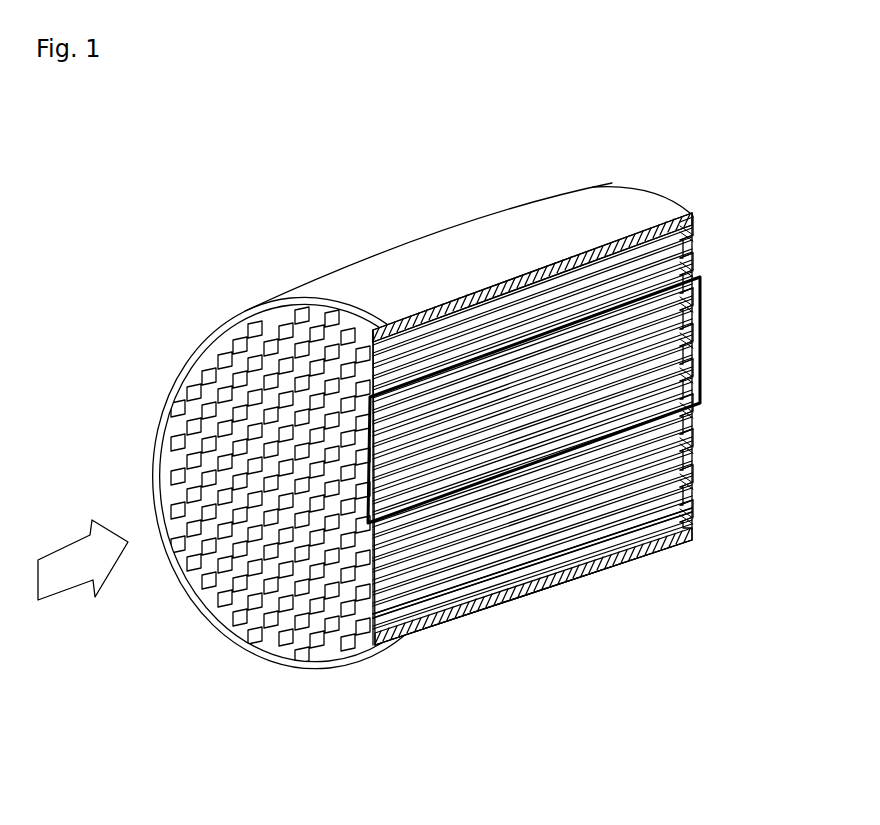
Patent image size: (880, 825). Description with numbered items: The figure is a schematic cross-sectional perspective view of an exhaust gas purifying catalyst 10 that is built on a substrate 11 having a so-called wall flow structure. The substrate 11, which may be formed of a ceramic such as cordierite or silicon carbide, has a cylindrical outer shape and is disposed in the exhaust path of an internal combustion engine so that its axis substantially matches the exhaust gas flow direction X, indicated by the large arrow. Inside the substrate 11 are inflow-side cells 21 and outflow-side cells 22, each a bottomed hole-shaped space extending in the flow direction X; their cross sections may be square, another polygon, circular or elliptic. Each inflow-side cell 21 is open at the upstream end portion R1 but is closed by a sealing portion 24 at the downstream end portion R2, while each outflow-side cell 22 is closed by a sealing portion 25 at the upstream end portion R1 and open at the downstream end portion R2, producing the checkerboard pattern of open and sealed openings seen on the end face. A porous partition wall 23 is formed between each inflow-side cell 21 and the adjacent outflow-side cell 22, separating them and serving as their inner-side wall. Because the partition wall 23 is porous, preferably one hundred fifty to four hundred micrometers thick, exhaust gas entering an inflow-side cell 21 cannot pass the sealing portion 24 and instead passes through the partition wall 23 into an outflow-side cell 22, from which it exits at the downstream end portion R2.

The exhaust gas purifying catalyst 10 is at (536, 126).
The substrate 11 is at (437, 262).
The inflow-side cell 21 is at (470, 590).
The outflow-side cell 22 is at (585, 568).
The partition wall 23 is at (640, 505).
The sealing portion 24 is at (692, 513).
The sealing portion 25 is at (378, 640).
The upstream end portion R1 is at (200, 348).
The downstream end portion R2 is at (693, 242).
The exhaust gas flow direction X is at (67, 573).